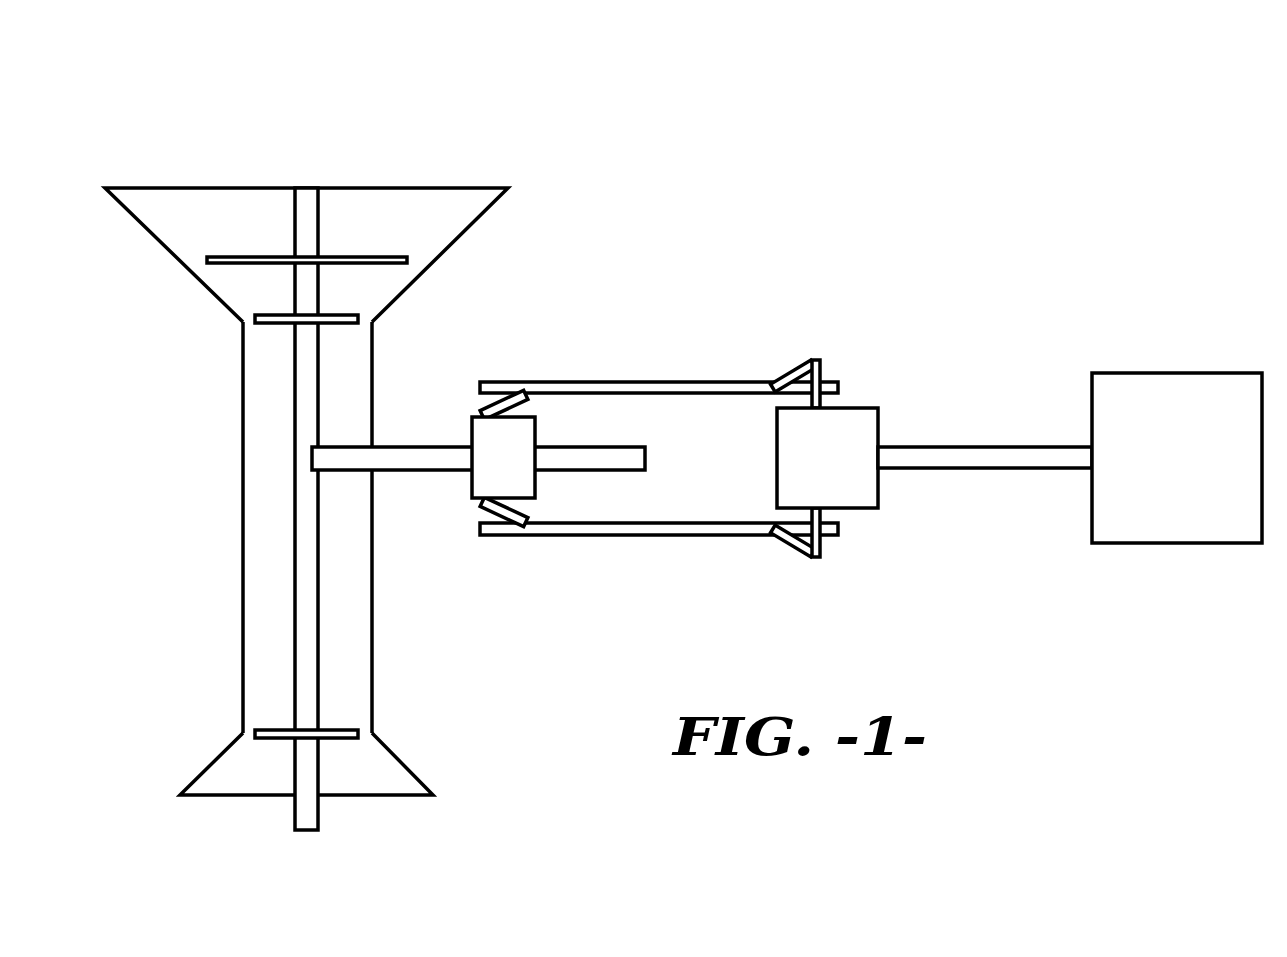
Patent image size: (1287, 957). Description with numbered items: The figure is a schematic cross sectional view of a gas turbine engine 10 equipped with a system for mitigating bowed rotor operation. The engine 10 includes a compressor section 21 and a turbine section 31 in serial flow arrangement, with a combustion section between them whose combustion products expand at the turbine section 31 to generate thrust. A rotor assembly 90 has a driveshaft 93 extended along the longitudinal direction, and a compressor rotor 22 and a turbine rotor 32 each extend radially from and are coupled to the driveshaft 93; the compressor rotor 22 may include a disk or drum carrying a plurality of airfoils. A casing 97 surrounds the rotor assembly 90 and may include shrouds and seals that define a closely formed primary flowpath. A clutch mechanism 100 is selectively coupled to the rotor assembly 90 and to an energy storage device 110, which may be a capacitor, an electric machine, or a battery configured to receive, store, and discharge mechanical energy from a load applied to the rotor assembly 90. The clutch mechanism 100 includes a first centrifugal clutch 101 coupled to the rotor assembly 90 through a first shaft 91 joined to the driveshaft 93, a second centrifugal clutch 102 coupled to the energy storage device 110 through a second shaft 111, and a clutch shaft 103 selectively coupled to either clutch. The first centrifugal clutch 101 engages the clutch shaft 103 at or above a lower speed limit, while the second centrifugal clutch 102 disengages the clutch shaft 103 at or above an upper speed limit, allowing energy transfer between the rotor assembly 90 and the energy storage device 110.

The gas turbine engine 10 is at (690, 160).
The compressor section 21 is at (115, 265).
The compressor rotor 22 is at (233, 265).
The turbine section 31 is at (156, 756).
The turbine rotor 32 is at (346, 770).
The rotor assembly 90 is at (316, 135).
The first shaft 91 is at (395, 458).
The driveshaft 93 is at (293, 538).
The casing 97 is at (243, 437).
The clutch mechanism 100 is at (662, 306).
The first centrifugal clutch 101 is at (502, 393).
The second centrifugal clutch 102 is at (807, 360).
The clutch shaft 103 is at (615, 537).
The energy storage device 110 is at (1185, 373).
The second shaft 111 is at (947, 470).